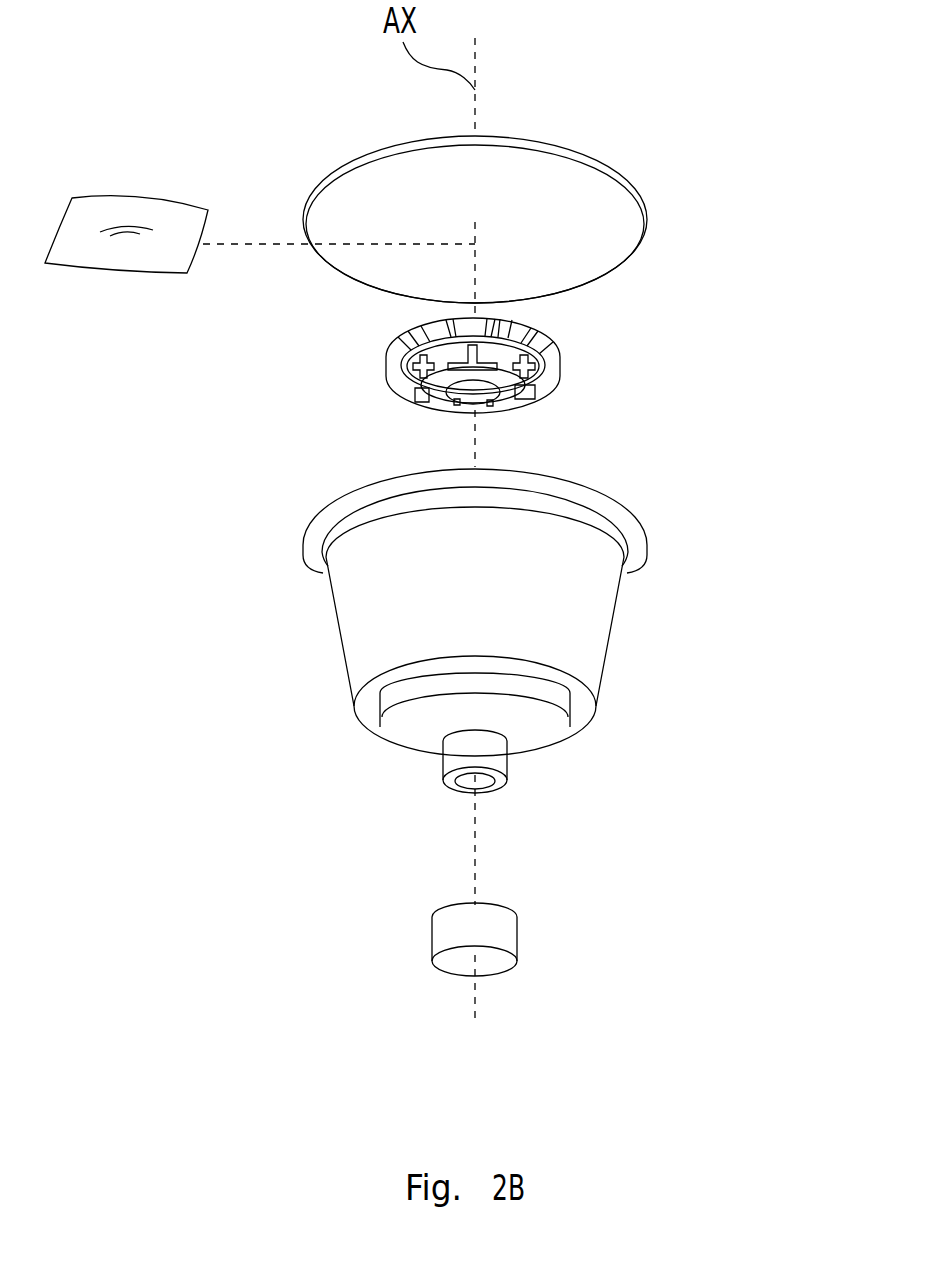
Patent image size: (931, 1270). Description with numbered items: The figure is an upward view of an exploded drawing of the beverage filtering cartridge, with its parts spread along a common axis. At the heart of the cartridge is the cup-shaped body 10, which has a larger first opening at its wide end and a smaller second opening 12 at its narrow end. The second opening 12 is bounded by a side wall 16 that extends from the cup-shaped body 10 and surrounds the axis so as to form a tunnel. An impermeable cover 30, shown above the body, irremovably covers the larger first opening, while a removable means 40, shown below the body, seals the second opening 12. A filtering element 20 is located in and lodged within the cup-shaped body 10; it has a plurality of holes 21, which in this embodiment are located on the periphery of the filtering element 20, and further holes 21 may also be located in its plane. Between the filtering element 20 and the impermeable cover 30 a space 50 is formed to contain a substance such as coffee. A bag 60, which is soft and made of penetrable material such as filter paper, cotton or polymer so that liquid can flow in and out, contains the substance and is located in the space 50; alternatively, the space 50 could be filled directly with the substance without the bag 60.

The cup-shaped body 10 is at (613, 625).
The second opening 12 is at (507, 775).
The side wall 16 is at (462, 748).
The filtering element 20 is at (563, 360).
The holes 21 is at (402, 333).
The impermeable cover 30 is at (613, 167).
The removable means 40 is at (518, 940).
The space 50 is at (507, 314).
The bag 60 is at (137, 197).